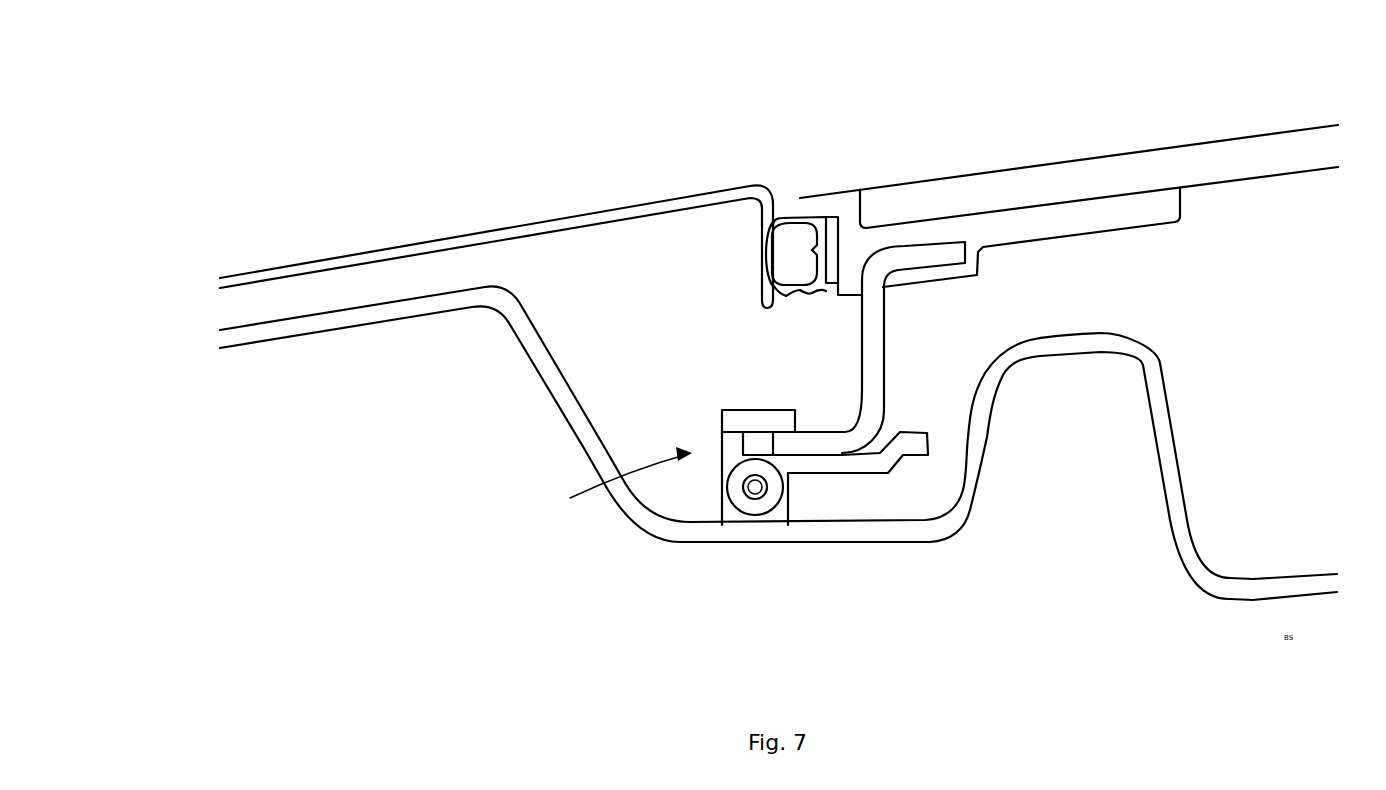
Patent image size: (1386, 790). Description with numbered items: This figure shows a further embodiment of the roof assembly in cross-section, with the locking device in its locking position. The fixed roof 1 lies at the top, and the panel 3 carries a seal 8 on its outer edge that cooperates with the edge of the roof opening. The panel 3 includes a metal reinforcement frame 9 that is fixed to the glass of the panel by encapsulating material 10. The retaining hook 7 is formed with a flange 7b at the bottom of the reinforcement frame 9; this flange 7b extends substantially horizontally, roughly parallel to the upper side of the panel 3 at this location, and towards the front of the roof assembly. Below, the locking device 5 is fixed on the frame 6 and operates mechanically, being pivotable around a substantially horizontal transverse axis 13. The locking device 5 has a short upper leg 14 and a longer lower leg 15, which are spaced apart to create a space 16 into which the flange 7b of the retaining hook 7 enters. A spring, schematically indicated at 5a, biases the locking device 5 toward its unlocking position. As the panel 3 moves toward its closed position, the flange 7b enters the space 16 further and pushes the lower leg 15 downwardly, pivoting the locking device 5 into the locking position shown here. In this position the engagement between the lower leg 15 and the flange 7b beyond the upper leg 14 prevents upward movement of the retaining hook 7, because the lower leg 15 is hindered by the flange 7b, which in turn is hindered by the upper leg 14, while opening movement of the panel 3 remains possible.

The fixed roof 1 is at (568, 216).
The panel 3 is at (1153, 173).
The locking device 5 is at (609, 488).
The spring 5a is at (727, 494).
The frame 6 is at (1180, 520).
The retaining hook 7 is at (897, 428).
The flange 7b is at (813, 438).
The seal 8 is at (797, 214).
The reinforcement frame 9 is at (920, 253).
The encapsulating material 10 is at (1043, 227).
The transverse axis 13 is at (753, 487).
The upper leg 14 is at (758, 420).
The lower leg 15 is at (820, 468).
The space 16 is at (753, 443).